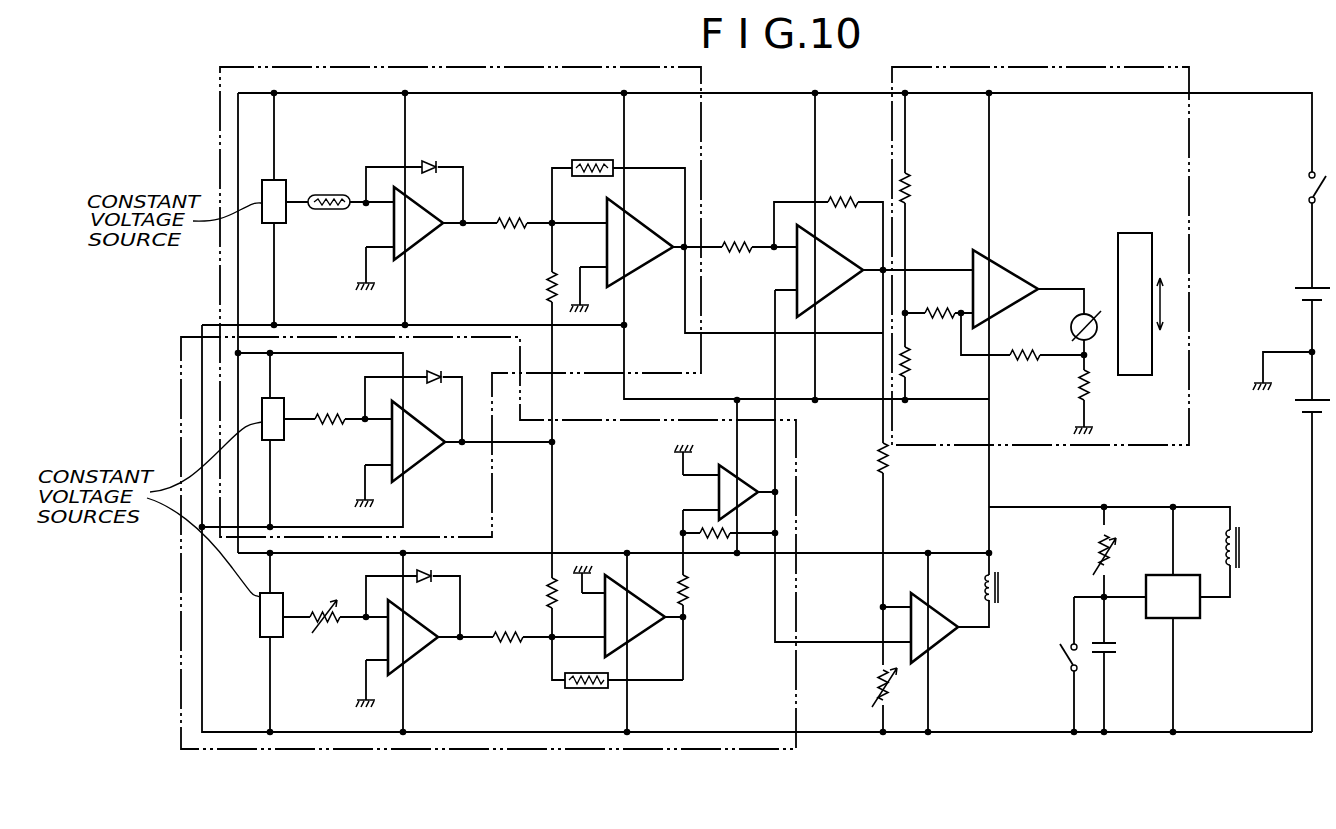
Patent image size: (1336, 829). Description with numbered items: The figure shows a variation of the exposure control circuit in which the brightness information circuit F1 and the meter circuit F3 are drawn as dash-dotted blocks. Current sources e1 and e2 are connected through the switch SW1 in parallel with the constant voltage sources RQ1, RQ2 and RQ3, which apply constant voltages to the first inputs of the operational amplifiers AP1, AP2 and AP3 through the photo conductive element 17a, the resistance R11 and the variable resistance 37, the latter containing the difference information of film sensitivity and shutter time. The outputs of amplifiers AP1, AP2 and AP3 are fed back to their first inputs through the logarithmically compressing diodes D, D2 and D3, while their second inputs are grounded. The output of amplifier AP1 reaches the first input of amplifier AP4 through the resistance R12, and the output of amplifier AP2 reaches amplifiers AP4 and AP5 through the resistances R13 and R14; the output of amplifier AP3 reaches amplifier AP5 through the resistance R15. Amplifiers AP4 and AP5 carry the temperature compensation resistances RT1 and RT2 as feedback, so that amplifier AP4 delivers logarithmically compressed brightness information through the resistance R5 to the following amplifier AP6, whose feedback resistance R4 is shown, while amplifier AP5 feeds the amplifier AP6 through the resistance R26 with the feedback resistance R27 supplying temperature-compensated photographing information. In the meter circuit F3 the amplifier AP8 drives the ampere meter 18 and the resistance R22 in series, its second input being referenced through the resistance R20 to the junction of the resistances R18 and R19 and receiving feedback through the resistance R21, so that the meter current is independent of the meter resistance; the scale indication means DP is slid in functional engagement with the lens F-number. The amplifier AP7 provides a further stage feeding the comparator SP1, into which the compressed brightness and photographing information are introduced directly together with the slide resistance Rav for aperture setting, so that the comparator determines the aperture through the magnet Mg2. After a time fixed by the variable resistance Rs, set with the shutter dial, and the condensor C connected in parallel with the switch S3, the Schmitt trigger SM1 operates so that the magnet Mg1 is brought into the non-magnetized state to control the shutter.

The circuit for the information of the brightness of the object to be photographed F1 is at (452, 67).
The meter circuit F3 is at (1075, 67).
The constant voltage source RQ1 is at (285, 219).
The photo conductive element 17a is at (331, 193).
The logarithmically compressing diode D is at (430, 150).
The operational amplifier AP1 is at (418, 223).
The resistance R12 is at (512, 209).
The temperature compensation resistance RT1 is at (592, 150).
The resistance R13 is at (537, 289).
The operational amplifier AP4 is at (640, 242).
The resistance R5 is at (737, 231).
The resistance R4 is at (843, 187).
The operational amplifier AP6 is at (830, 271).
The resistance R18 is at (919, 189).
The resistance R19 is at (919, 365).
The resistance R20 is at (945, 320).
The operational amplifier AP8 is at (1005, 289).
The resistance R21 is at (1025, 369).
The resistance R22 is at (1100, 387).
The ampere meter 18 is at (1072, 321).
The scale indication means DP is at (1145, 378).
The switch SW1 is at (1302, 187).
The current source e1 is at (1293, 297).
The current source e2 is at (1294, 420).
The constant voltage source RQ2 is at (282, 437).
The resistance R11 is at (330, 403).
The logarithmically compressing diode D2 is at (436, 362).
The operational amplifier AP2 is at (418, 441).
The constant voltage source RQ3 is at (252, 618).
The variable resistance 37 is at (326, 600).
The logarithmically compressing diode D3 is at (427, 591).
The operational amplifier AP3 is at (413, 637).
The resistance R15 is at (705, 559).
The resistance R14 is at (538, 595).
The operational amplifier AP5 is at (635, 616).
The temperature compensation resistance RT2 is at (586, 696).
The resistance R26 is at (699, 591).
The resistance R27 is at (716, 540).
The operational amplifier AP7 is at (736, 489).
The comparator SP1 is at (934, 628).
The variable resistance for aperture setting Rav is at (896, 688).
The magnet for aperture setting Mg2 is at (1010, 592).
The variable resistance for shutter time setting Rs is at (1091, 555).
The switch S3 is at (1057, 666).
The condensor C is at (1109, 643).
The Schmitt trigger SM1 is at (1173, 596).
The magnet for shutter time setting Mg1 is at (1253, 548).